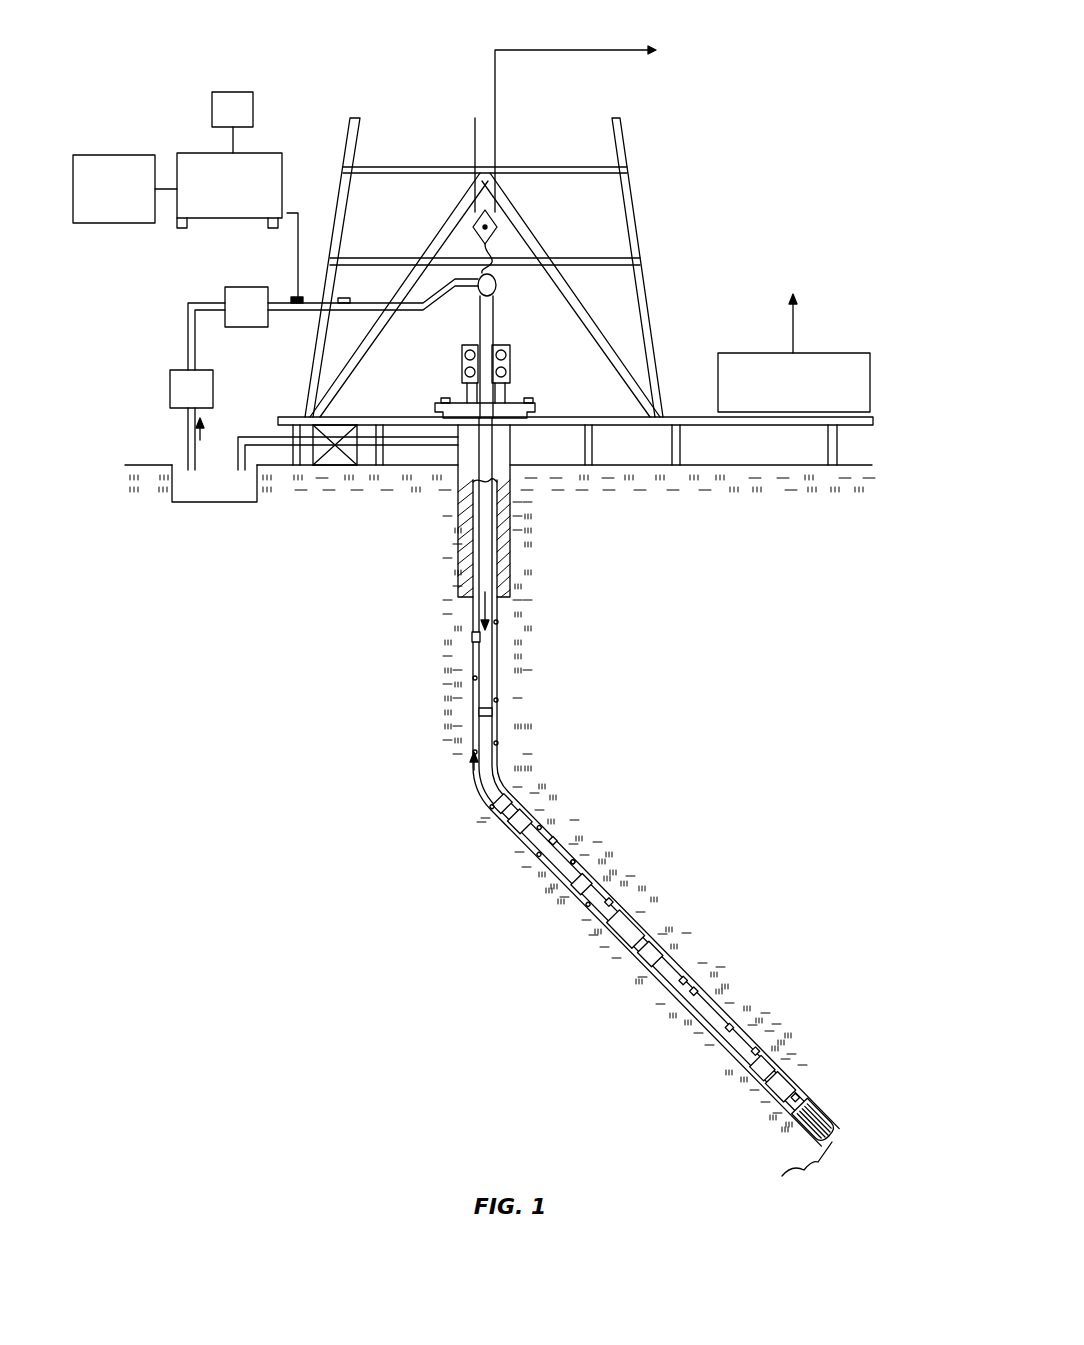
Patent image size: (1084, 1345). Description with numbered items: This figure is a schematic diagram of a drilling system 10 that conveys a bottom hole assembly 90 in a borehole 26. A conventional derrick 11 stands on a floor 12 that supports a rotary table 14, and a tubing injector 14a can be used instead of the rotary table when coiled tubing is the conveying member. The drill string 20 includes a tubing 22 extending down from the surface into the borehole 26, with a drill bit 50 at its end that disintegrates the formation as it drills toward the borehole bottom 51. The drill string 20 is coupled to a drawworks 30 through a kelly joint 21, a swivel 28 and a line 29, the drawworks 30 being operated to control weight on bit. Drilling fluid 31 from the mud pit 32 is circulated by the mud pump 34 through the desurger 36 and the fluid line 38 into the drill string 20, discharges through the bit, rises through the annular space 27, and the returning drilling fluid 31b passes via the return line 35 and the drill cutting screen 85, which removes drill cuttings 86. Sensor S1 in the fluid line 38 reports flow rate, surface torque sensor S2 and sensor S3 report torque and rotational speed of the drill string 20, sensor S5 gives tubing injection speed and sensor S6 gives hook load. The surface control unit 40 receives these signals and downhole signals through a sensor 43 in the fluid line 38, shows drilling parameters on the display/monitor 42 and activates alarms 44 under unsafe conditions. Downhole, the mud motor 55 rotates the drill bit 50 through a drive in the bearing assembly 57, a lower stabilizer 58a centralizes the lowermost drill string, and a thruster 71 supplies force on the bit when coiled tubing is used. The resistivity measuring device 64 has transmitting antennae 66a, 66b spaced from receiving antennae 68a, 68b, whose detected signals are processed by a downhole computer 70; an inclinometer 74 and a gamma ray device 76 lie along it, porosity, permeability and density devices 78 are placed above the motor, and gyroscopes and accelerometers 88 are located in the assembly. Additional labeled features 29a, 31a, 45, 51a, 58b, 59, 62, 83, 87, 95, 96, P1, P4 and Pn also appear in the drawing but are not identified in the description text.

The drilling system 10 is at (416, 62).
The derrick 11 is at (645, 270).
The floor 12 is at (676, 417).
The rotary table 14 is at (510, 404).
The tubing injector 14a is at (511, 370).
The drill string 20 is at (500, 690).
The kelly joint 21 is at (495, 330).
The tubing 22 is at (478, 672).
The borehole 26 is at (507, 788).
The annular space 27 is at (525, 820).
The swivel 28 is at (470, 300).
The line 29 is at (500, 140).
The drill collar 29a is at (628, 918).
The drawworks 30 is at (846, 353).
The drilling fluid 31 is at (178, 490).
The return fluid flow 31a is at (476, 612).
The returning drilling fluid 31b is at (472, 772).
The mud pit 32 is at (237, 497).
The mud pump 34 is at (182, 378).
The return line 35 is at (392, 444).
The desurger 36 is at (224, 287).
The fluid line 38 is at (291, 312).
The surface control unit 40 is at (198, 152).
The display/monitor 42 is at (236, 91).
The sensor 43 is at (297, 294).
The alarms 44 is at (136, 224).
The communication link 45 is at (292, 215).
The drill bit 50 is at (848, 1106).
The borehole bottom 51 is at (800, 1178).
The bit face 51a is at (845, 1129).
The downhole motor 55 is at (570, 850).
The bearing assembly 57 is at (808, 1062).
The lower stabilizer 58a is at (784, 1076).
The stabilizer 58b is at (616, 912).
The mud motor 59 is at (790, 1092).
The sensor 62 is at (616, 902).
The resistivity measuring device 64 is at (712, 1010).
The transmitting antenna 66a is at (638, 933).
The transmitting antenna 66b is at (740, 1036).
The receiving antenna 68a is at (680, 982).
The receiving antenna 68b is at (688, 985).
The downhole computer 70 is at (512, 812).
The thruster 71 is at (770, 1053).
The inclinometer 74 is at (710, 1000).
The gamma ray device 76 is at (738, 1026).
The formation porosity, permeability and density devices 78 is at (498, 806).
The telemetry sub 83 is at (660, 958).
The drill cutting screen 85 is at (332, 425).
The drill cuttings 86 is at (498, 743).
The casing 87 is at (511, 573).
The gyroscopes and accelerometers 88 is at (755, 1048).
The bottom hole assembly 90 is at (738, 845).
The formation 95 is at (880, 985).
The formation fluid 96 is at (700, 1139).
The flow rate sensor S1 is at (346, 296).
The surface torque sensor S2 is at (534, 400).
The rotational speed sensor S3 is at (442, 398).
The tubing injection speed sensor S5 is at (496, 302).
The hook load sensor S6 is at (478, 272).
The pressure sensor P1 is at (802, 1094).
The pressure sensor P4 is at (556, 838).
The pressure sensor Pn is at (472, 637).